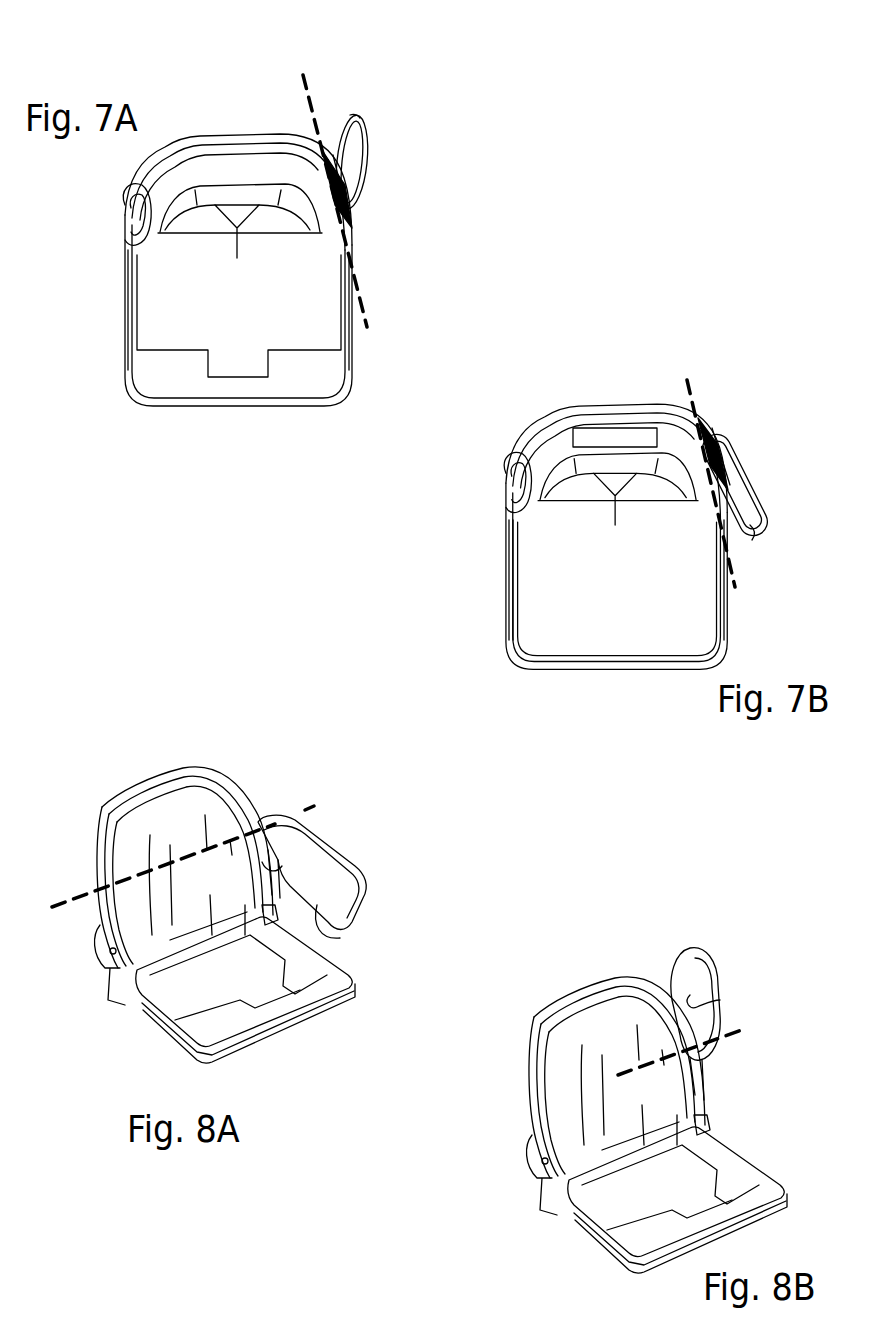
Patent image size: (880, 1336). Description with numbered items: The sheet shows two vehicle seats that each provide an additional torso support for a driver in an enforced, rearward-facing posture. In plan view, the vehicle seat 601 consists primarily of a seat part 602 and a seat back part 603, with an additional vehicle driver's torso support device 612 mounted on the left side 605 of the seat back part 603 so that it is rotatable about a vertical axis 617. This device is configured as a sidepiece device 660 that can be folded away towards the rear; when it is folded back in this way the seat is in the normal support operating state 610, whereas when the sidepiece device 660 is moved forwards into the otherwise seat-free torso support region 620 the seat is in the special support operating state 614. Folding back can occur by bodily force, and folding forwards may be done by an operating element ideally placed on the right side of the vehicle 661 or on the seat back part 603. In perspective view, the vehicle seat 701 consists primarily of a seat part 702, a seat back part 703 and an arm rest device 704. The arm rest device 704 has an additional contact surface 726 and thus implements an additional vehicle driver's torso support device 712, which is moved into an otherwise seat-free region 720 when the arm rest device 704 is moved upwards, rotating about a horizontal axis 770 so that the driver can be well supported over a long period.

In FIG. 7A, the vehicle seat 601 is at (313, 241).
In FIG. 7B, the vehicle seat 601 is at (599, 501).
In FIG. 7A, the seat part 602 is at (193, 388).
In FIG. 7B, the seat part 602 is at (535, 642).
In FIG. 7A, the seat back part 603 is at (225, 165).
In FIG. 7B, the seat back part 603 is at (530, 442).
In FIG. 7A, the left side 605 is at (450, 279).
In FIG. 7B, the left side 605 is at (830, 556).
In FIG. 7A, the normal support operating state 610 is at (422, 172).
In FIG. 7A, the additional vehicle driver's torso support device 612 is at (359, 108).
In FIG. 7B, the additional vehicle driver's torso support device 612 is at (753, 545).
In FIG. 7B, the special support operating state 614 is at (490, 590).
In FIG. 7A, the vertical axis 617 is at (306, 79).
In FIG. 7B, the vertical axis 617 is at (724, 453).
In FIG. 7A, the otherwise seat-free torso support region 620 is at (405, 231).
In FIG. 7B, the otherwise seat-free torso support region 620 is at (741, 452).
In FIG. 7A, the sidepiece device 660 is at (362, 150).
In FIG. 7B, the sidepiece device 660 is at (741, 506).
In FIG. 7A, the right side of the vehicle 661 is at (106, 322).
In FIG. 7B, the right side of the vehicle 661 is at (480, 640).
In FIG. 8A, the vehicle seat 701 is at (250, 879).
In FIG. 8B, the vehicle seat 701 is at (640, 1048).
In FIG. 8A, the seat part 702 is at (196, 1013).
In FIG. 8B, the seat part 702 is at (573, 1253).
In FIG. 8A, the seat back part 703 is at (132, 818).
In FIG. 8B, the seat back part 703 is at (590, 1083).
In FIG. 8A, the arm rest device 704 is at (298, 838).
In FIG. 8B, the arm rest device 704 is at (698, 953).
In FIG. 8A, the additional vehicle driver's torso support device 712 is at (353, 869).
In FIG. 8B, the additional vehicle driver's torso support device 712 is at (700, 996).
In FIG. 8A, the otherwise seat-free region 720 is at (282, 797).
In FIG. 8A, the additional contact surface 726 is at (340, 938).
In FIG. 8B, the additional contact surface 726 is at (753, 990).
In FIG. 8A, the horizontal axis 770 is at (191, 832).
In FIG. 8B, the horizontal axis 770 is at (700, 1055).